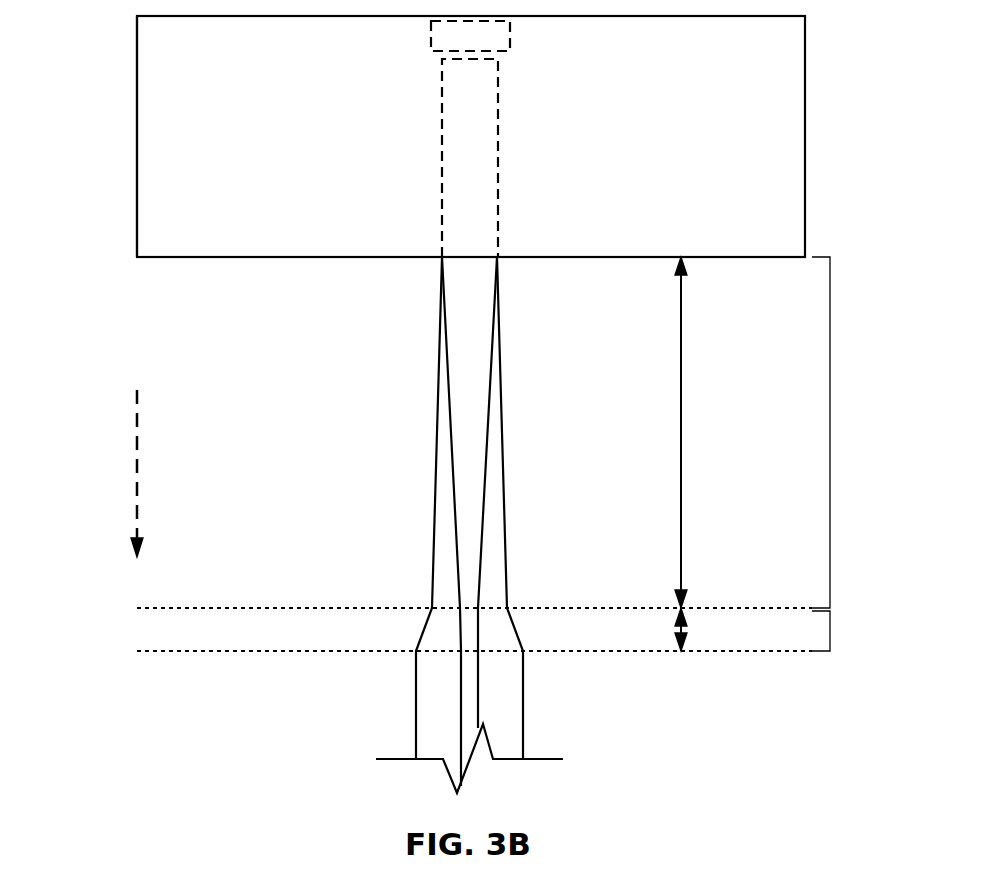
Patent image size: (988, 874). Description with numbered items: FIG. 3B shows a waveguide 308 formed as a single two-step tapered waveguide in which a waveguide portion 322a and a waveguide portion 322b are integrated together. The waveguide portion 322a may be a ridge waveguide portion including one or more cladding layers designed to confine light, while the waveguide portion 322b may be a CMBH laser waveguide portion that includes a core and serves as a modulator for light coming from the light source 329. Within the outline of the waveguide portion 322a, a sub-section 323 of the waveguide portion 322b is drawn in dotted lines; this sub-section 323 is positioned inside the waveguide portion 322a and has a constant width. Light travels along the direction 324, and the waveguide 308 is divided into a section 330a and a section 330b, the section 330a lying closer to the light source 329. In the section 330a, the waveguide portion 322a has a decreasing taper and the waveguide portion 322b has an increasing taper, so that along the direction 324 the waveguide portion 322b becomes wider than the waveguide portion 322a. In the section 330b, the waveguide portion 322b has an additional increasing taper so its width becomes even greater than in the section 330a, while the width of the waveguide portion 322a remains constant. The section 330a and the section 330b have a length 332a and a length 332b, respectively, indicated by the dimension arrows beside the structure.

The waveguide 308 is at (108, 128).
The waveguide portion 322a is at (137, 180).
The waveguide portion 322b is at (436, 400).
The sub-section 323 is at (498, 112).
The direction 324 is at (137, 468).
The light source 329 is at (510, 43).
The section 330a is at (830, 430).
The section 330b is at (830, 630).
The length 332a is at (682, 345).
The length 332b is at (685, 628).